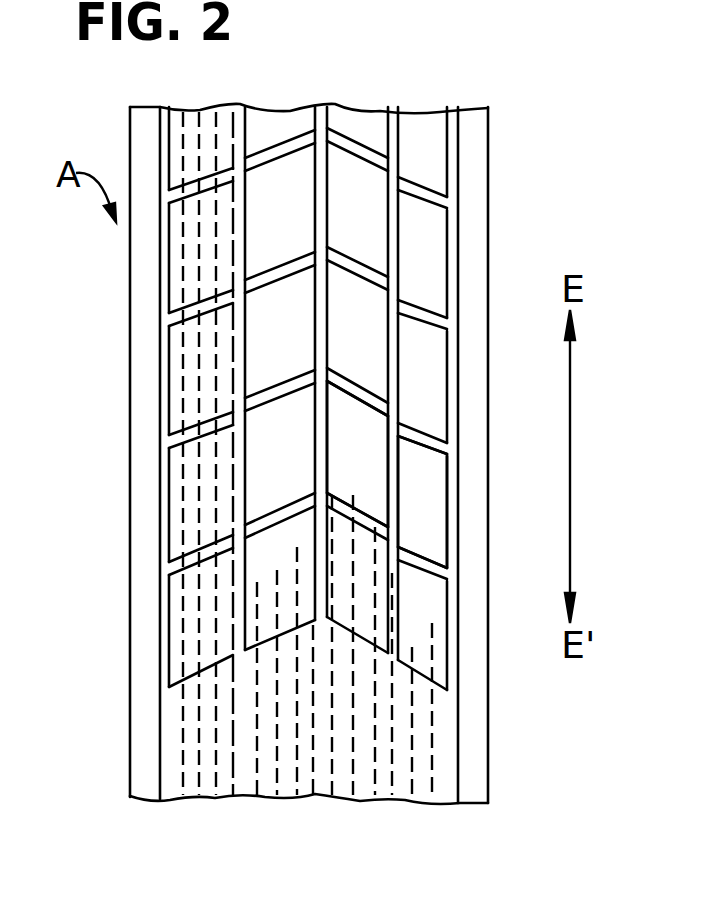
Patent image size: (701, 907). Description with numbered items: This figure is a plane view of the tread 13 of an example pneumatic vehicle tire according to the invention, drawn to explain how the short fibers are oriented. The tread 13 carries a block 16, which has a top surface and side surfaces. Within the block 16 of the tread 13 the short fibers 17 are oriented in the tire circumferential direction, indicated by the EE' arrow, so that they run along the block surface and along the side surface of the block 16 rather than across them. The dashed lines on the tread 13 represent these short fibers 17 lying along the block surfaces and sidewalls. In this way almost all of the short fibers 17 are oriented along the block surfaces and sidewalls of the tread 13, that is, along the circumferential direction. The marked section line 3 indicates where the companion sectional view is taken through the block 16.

The tread 13 is at (523, 175).
The block 16 is at (370, 479).
The short fibers 17 is at (182, 606).
The section line 3- 3 is at (355, 105).